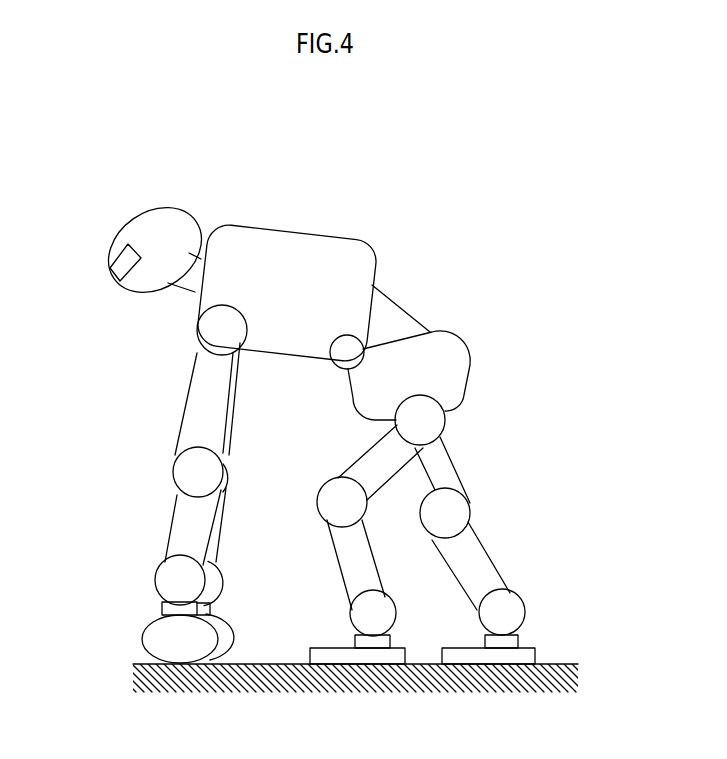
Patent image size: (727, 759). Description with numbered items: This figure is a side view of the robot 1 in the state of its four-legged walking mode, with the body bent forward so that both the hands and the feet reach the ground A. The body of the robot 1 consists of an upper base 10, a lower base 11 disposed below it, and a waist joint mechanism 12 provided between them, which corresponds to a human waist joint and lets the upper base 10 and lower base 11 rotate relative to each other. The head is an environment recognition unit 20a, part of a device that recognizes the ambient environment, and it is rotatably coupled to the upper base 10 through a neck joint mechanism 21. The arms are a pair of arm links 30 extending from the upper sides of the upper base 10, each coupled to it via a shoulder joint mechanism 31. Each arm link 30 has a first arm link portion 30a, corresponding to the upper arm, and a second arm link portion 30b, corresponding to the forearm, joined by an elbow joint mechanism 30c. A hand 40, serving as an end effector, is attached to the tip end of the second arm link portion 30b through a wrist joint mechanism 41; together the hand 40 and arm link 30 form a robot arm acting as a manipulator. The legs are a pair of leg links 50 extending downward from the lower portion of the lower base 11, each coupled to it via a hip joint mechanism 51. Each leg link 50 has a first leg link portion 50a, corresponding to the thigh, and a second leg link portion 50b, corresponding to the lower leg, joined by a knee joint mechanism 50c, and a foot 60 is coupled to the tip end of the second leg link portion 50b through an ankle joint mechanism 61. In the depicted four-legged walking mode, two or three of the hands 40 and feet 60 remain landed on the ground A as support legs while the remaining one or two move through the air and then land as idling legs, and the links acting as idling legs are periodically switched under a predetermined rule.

The robot 1 is at (114, 184).
The upper base 10 is at (250, 227).
The lower base 11 is at (455, 333).
The waist joint mechanism 12 is at (398, 300).
The environment recognition unit 20a is at (173, 205).
The neck joint mechanism 21 is at (177, 292).
The arm link 30 is at (98, 405).
The first arm link portion 30a is at (197, 442).
The second arm link portion 30b is at (187, 505).
The elbow joint mechanism 30c is at (183, 473).
The shoulder joint mechanism 31 is at (197, 343).
The hand 40 is at (145, 638).
The wrist joint mechanism 41 is at (158, 582).
The leg link 50 is at (250, 426).
The first leg link portion 50a is at (370, 468).
The second leg link portion 50b is at (340, 541).
The knee joint mechanism 50c is at (337, 505).
The hip joint mechanism 51 is at (435, 422).
The foot 60 is at (315, 650).
The ankle joint mechanism 61 is at (357, 618).
The ground A is at (578, 664).